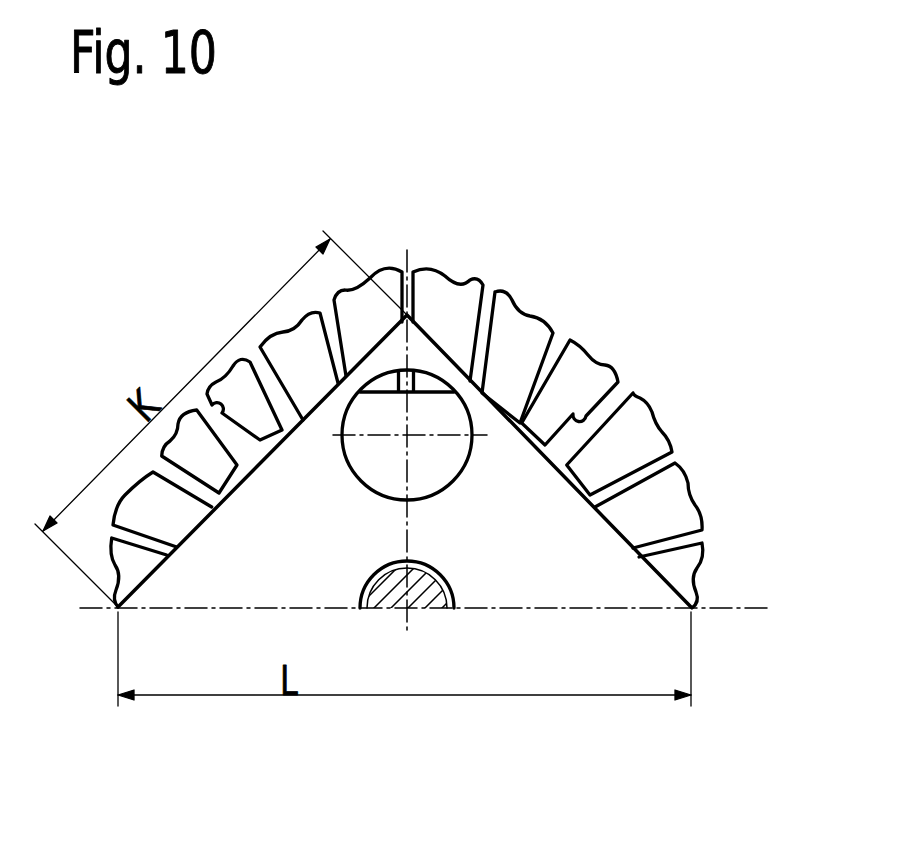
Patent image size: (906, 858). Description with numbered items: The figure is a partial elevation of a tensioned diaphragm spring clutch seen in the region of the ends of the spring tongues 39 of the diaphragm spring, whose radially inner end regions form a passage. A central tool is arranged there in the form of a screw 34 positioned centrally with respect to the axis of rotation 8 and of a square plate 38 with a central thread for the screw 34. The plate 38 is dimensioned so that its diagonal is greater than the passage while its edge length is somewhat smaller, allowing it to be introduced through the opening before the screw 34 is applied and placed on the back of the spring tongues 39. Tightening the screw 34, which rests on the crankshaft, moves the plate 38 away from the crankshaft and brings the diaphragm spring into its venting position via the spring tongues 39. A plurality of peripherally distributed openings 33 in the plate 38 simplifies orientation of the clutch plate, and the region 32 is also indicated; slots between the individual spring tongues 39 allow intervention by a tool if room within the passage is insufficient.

The axis of rotation 8 is at (405, 612).
The slot 32 is at (572, 437).
The openings 33 is at (458, 422).
The screw 34 is at (430, 602).
The plate 38 is at (580, 540).
The spring tongues 39 is at (645, 438).